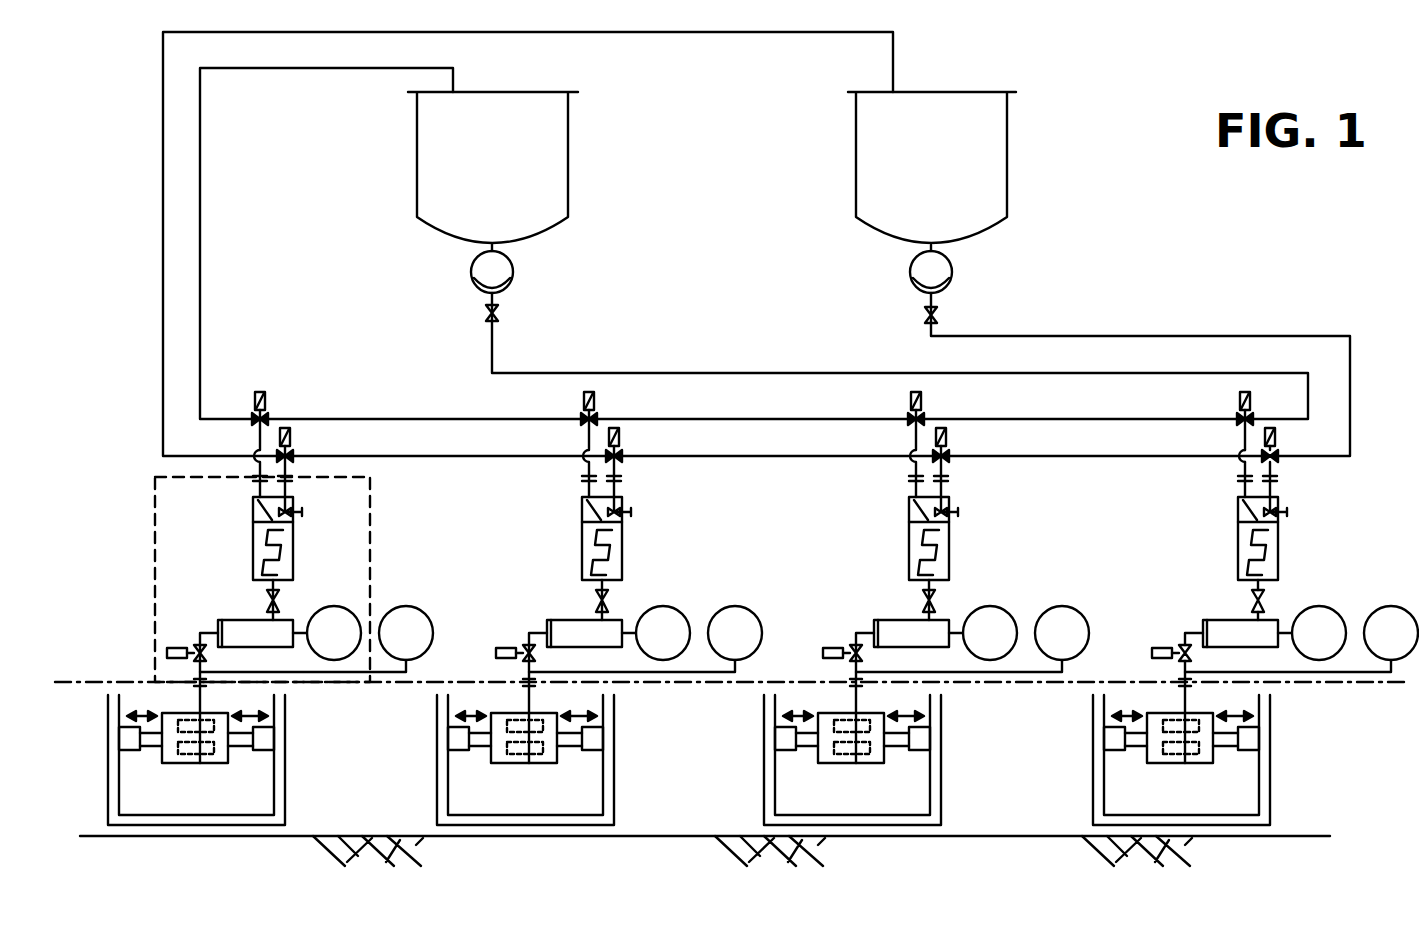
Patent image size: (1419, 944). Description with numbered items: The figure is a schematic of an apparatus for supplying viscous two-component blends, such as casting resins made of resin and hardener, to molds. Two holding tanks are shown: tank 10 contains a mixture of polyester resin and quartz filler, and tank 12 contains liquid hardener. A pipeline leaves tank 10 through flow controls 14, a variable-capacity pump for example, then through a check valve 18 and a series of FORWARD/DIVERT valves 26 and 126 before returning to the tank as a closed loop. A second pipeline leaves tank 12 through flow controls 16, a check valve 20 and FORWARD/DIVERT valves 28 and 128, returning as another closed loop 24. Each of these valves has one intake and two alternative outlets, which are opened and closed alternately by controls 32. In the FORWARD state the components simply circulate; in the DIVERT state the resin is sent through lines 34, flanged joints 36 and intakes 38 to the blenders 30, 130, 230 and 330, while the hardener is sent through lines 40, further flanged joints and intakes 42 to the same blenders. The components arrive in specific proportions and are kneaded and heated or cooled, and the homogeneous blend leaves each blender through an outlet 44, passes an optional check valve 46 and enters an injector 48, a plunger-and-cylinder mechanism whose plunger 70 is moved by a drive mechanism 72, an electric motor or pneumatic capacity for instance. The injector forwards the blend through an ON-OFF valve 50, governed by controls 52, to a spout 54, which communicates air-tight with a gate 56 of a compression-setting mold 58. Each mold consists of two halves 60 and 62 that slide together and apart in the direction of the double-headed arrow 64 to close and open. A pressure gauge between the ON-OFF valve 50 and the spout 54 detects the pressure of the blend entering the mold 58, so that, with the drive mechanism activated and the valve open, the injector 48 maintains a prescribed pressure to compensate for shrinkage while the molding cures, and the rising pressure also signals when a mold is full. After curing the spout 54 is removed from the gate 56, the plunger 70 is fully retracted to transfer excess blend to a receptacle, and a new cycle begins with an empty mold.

The tank 10 is at (568, 158).
The tank 12 is at (1007, 162).
The flow controls 14 is at (513, 276).
The flow controls 16 is at (952, 270).
The check valve 18 is at (486, 314).
The check valve 20 is at (925, 316).
The closed loop 24 is at (1024, 336).
The FORWARD/DIVERT valve 26 is at (1262, 410).
The FORWARD/DIVERT valve 28 is at (1302, 434).
The blender 30 is at (1320, 538).
The controls 32 is at (1220, 383).
The line 34 is at (1215, 453).
The flanged joint 36 is at (1211, 477).
The intake 38 is at (1217, 506).
The line 40 is at (1316, 481).
The intake 42 is at (1313, 500).
The outlet 44 is at (1294, 590).
The check valve 46 is at (1221, 594).
The injector 48 is at (1326, 674).
The ON-OFF valve 50 is at (1148, 614).
The controls 52 is at (1136, 633).
The spout 54 is at (1246, 652).
The gate 56 is at (1121, 692).
The compression-setting mold 58 is at (1209, 760).
The mold half 60 is at (1216, 761).
The mold half 62 is at (1151, 760).
The double-headed arrow 64 is at (1217, 721).
The plunger 70 is at (1209, 612).
The drive mechanism 72 is at (1381, 612).
The FORWARD/DIVERT valve 126 is at (948, 404).
The FORWARD/DIVERT valve 128 is at (991, 443).
The blender 130 is at (926, 604).
The blender 230 is at (628, 574).
The blender 330 is at (372, 549).